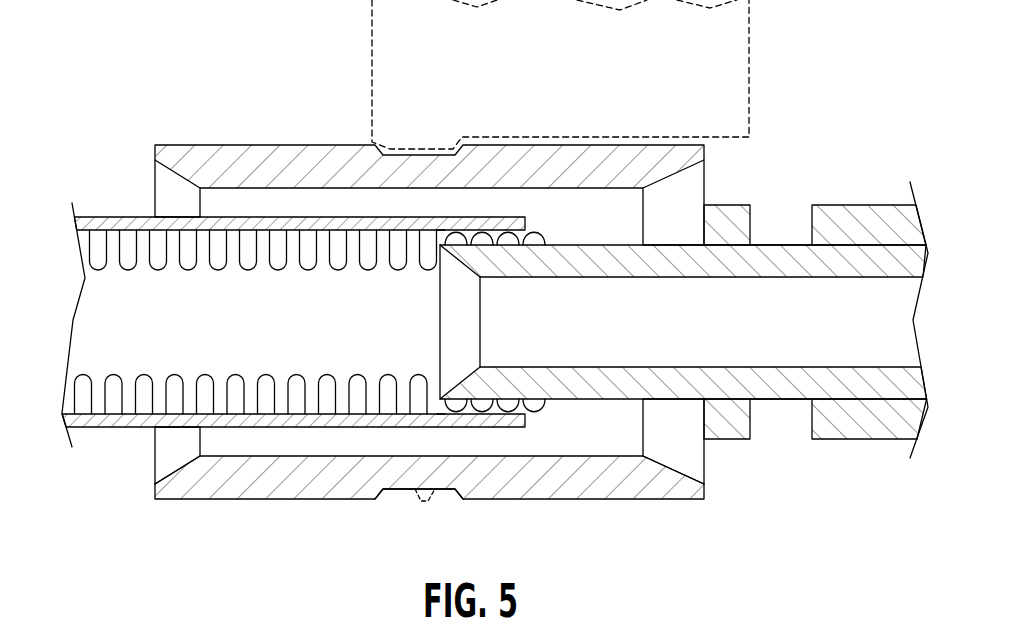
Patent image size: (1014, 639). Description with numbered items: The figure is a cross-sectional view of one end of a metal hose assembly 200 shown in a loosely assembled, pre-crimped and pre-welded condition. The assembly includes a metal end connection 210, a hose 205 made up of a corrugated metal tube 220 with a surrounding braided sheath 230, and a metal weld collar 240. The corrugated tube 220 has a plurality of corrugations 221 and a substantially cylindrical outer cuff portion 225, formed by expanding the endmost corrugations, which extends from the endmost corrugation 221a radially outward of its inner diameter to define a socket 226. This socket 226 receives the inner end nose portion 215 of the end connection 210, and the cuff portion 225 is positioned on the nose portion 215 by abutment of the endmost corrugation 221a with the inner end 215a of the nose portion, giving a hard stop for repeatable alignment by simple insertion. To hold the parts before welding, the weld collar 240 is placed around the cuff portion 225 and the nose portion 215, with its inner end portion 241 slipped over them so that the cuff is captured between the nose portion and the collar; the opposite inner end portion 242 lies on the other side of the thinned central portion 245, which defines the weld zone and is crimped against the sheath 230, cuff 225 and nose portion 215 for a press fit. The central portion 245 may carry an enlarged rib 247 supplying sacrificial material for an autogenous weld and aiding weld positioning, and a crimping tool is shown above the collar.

The metal hose assembly 200 is at (142, 100).
The hose 205 is at (110, 205).
The metal end connection 210 is at (800, 470).
The inner end nose portion 215 is at (507, 390).
The inner end of the nose portion 215a is at (440, 392).
The corrugated metal tube 220 is at (148, 251).
The corrugations 221 is at (257, 380).
The endmost corrugation 221a is at (445, 248).
The outer cuff portion 225 is at (503, 413).
The socket 226 is at (447, 253).
The sheath 230 is at (443, 187).
The metal weld collar 240 is at (320, 523).
The inner end portion 241 is at (685, 495).
The inner chamfer 242 is at (188, 487).
The central portion 245 is at (448, 489).
The enlarged rib 247 is at (412, 503).